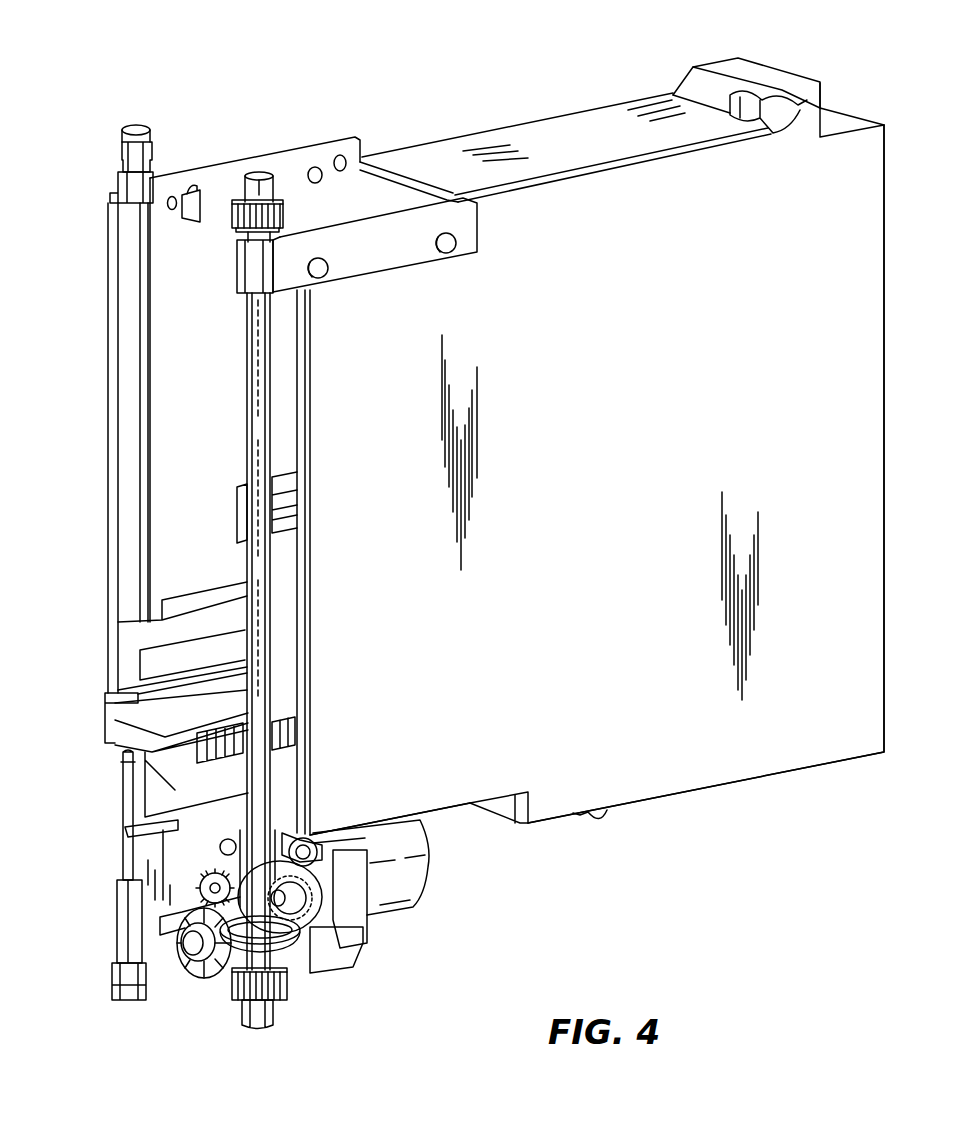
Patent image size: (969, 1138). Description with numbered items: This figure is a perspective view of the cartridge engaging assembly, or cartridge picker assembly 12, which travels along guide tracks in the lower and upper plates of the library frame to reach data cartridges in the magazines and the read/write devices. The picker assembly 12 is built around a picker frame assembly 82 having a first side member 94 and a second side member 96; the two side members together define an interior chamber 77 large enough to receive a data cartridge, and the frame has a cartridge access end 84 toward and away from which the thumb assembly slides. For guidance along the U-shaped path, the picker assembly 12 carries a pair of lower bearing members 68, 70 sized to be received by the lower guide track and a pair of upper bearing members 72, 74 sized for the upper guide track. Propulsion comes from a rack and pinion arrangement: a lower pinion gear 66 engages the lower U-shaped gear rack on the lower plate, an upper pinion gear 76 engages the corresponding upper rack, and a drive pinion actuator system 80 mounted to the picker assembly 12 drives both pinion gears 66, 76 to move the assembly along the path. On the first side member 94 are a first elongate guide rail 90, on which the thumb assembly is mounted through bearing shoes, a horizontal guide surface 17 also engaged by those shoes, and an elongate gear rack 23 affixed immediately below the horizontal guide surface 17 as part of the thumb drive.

The cartridge picker assembly 12 is at (247, 59).
The horizontal guide surface 17 is at (128, 737).
The gear rack 23 is at (225, 763).
The lower pinion gear 66 is at (230, 982).
The lower bearing member 68 is at (275, 1007).
The lower bearing member 70 is at (112, 975).
The upper bearing member 72 is at (245, 186).
The upper bearing member 74 is at (118, 178).
The upper pinion gear 76 is at (236, 220).
The interior chamber 77 is at (189, 378).
The drive pinion actuator system 80 is at (430, 883).
The picker frame assembly 82 is at (773, 64).
The cartridge access end 84 is at (108, 503).
The first elongate guide rail 90 is at (133, 710).
The first side member 94 is at (487, 130).
The second side member 96 is at (617, 474).